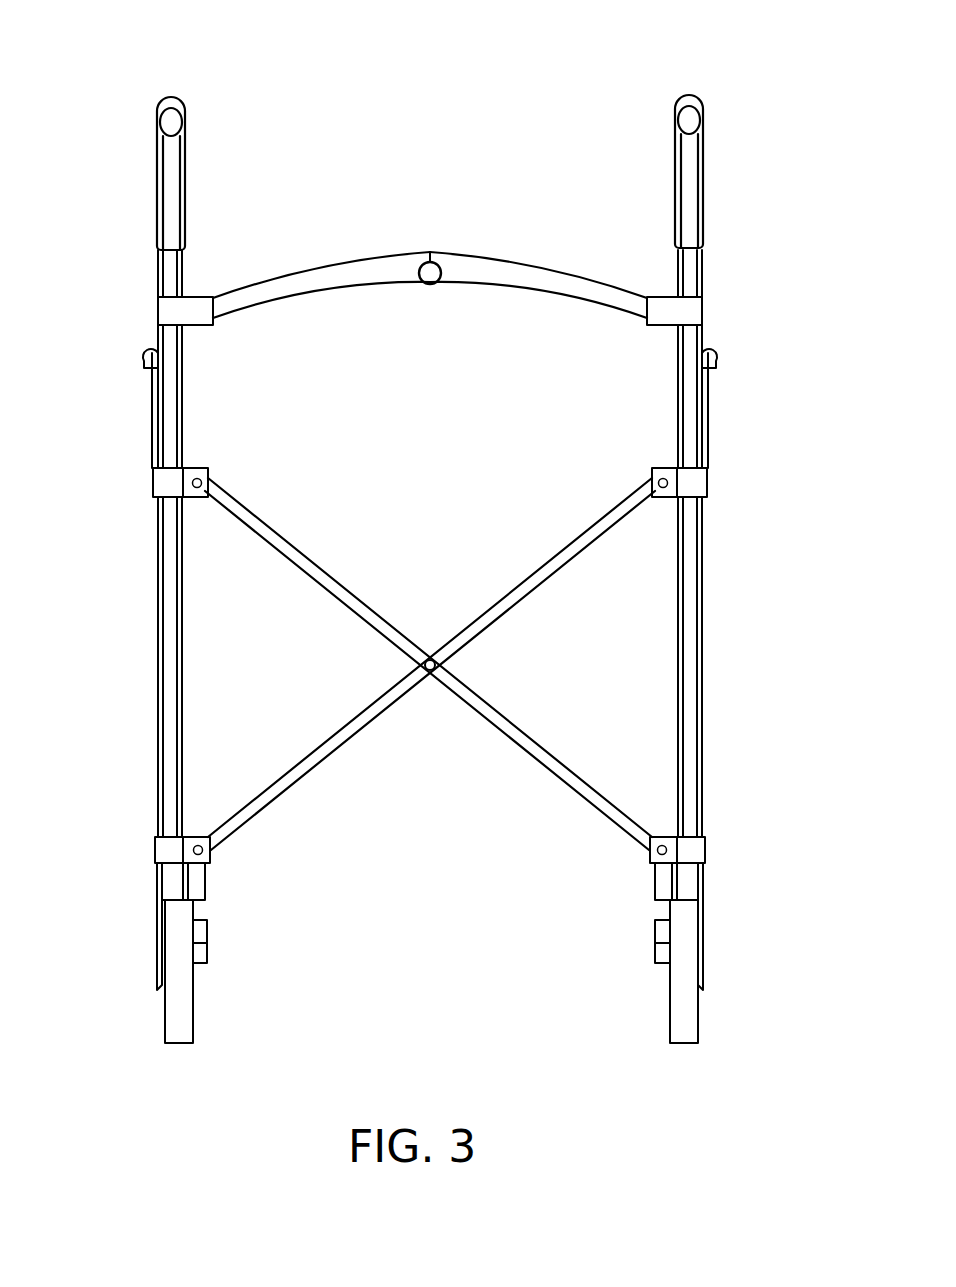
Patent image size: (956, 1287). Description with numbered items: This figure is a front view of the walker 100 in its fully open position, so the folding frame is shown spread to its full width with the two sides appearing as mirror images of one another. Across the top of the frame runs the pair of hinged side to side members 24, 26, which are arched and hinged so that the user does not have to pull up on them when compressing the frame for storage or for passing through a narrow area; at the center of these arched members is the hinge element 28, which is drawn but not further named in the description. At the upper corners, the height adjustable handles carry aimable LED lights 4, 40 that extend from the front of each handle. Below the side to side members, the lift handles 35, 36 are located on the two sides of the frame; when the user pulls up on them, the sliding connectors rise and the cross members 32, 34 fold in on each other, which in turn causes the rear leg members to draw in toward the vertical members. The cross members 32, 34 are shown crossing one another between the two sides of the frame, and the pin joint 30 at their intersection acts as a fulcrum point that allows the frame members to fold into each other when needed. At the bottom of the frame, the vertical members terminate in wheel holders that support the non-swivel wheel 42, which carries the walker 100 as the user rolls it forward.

The walker 100 is at (173, 70).
The aimable LED light 40 is at (183, 123).
The aimable LED light 4 is at (701, 120).
The hinged side to side member 26 is at (325, 266).
The hinged side to side member 24 is at (505, 258).
The center hinge 28 is at (422, 286).
The lift handle 36 is at (150, 410).
The lift handle 35 is at (710, 395).
The cross member 32 is at (530, 570).
The cross member 34 is at (515, 722).
The pin joint 30 is at (430, 655).
The non-swivel wheel 42 is at (188, 1022).